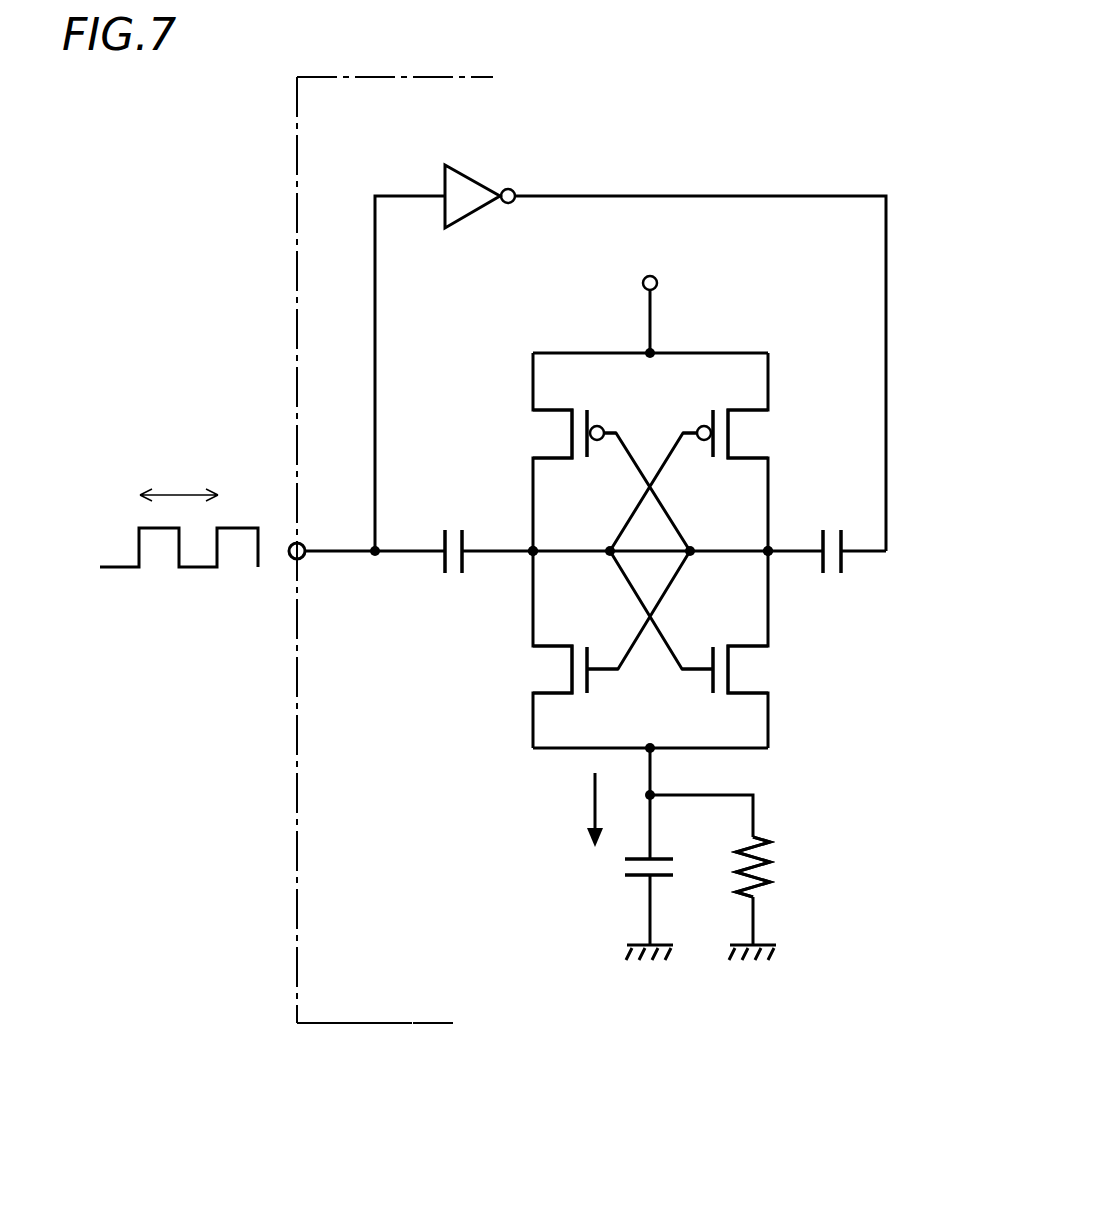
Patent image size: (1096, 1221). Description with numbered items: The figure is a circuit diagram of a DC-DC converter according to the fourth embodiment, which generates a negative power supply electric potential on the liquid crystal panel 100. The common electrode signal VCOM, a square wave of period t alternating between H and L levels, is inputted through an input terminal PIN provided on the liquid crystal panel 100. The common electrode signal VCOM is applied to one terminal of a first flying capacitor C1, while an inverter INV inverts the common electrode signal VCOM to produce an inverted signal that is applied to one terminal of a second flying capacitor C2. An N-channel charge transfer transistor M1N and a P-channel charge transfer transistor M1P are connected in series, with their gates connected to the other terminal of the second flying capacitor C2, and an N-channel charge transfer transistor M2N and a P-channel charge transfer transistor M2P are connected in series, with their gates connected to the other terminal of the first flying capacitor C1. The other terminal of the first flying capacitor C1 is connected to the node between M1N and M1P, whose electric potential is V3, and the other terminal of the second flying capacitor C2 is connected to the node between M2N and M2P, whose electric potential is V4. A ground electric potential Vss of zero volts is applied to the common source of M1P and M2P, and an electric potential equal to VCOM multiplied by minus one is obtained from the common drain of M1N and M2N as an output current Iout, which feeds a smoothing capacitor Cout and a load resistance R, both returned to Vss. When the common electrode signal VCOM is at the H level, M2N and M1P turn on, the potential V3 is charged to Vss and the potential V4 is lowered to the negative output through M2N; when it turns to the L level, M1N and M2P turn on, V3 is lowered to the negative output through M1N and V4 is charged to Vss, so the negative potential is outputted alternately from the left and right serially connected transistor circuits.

The inverter INV is at (483, 172).
The P-channel type charge transfer transistor M1P is at (535, 428).
The P-channel type charge transfer transistor M2P is at (770, 428).
The N-channel type charge transfer transistor M1N is at (535, 675).
The N-channel type charge transfer transistor M2N is at (768, 675).
The first flying capacitor C1 is at (452, 525).
The second flying capacitor C2 is at (830, 525).
The electric potential at connecting node between M1N and M1P V3 is at (527, 556).
The electric potential at connecting node between M2N and M2P V4 is at (775, 556).
The input terminal PIN is at (305, 557).
The common electrode signal VCOM is at (179, 571).
The period t is at (179, 484).
The output current Iout is at (566, 810).
The smoothing capacitor Cout is at (617, 865).
The load resistance R is at (785, 866).
The ground electric potential Vss is at (689, 625).
The liquid crystal panel 100 is at (352, 1003).